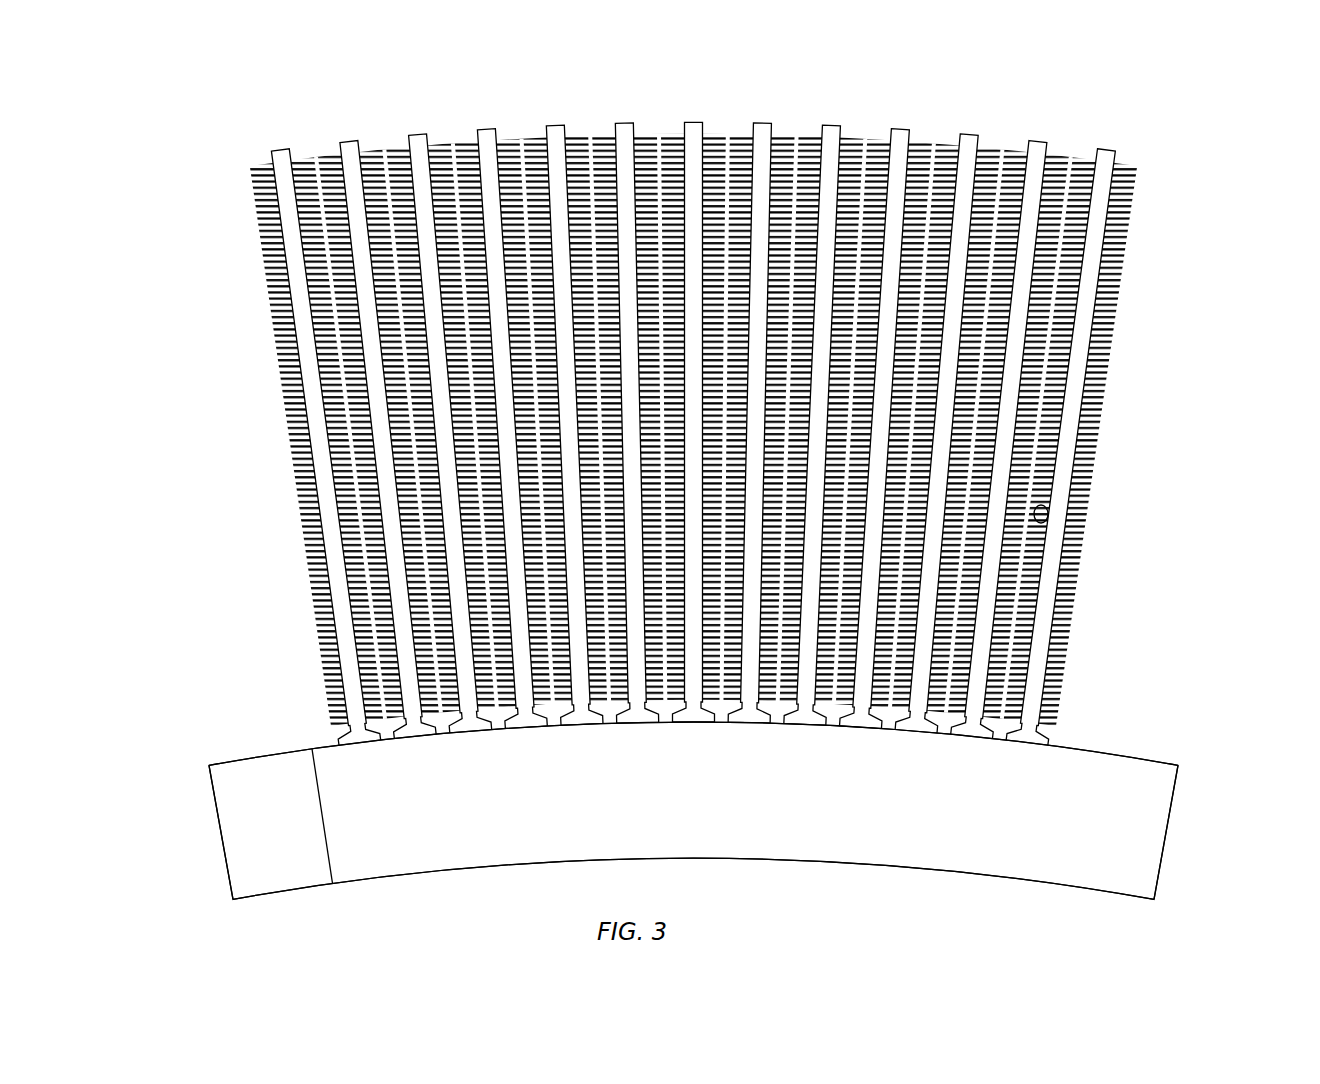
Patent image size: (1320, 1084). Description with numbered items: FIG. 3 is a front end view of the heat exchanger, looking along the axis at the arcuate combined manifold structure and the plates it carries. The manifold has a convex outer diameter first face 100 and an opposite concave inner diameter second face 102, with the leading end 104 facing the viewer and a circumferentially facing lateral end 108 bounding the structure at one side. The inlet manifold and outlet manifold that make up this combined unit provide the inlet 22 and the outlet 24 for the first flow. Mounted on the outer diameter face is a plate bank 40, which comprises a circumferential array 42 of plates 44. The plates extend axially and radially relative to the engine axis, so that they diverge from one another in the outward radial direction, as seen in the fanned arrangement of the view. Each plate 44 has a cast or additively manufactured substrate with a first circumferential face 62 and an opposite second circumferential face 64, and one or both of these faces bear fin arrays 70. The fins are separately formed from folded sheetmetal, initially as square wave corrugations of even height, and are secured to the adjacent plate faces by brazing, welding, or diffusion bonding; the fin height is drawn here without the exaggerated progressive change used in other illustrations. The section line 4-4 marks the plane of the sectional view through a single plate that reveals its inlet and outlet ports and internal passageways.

The section line 4- 4 is at (487, 123).
The inlet 22 is at (203, 828).
The outlet 24 is at (1192, 810).
The plate bank 40 is at (719, 394).
The circumferential array 42 is at (888, 123).
The plate 44 is at (1120, 147).
The first circumferential face 62 is at (1048, 524).
The second circumferential face 64 is at (1072, 503).
The fin array 70 is at (1135, 237).
The first face 100 is at (1112, 750).
The second face 102 is at (1036, 884).
The leading end 104 is at (855, 822).
The lateral end 108 is at (326, 834).